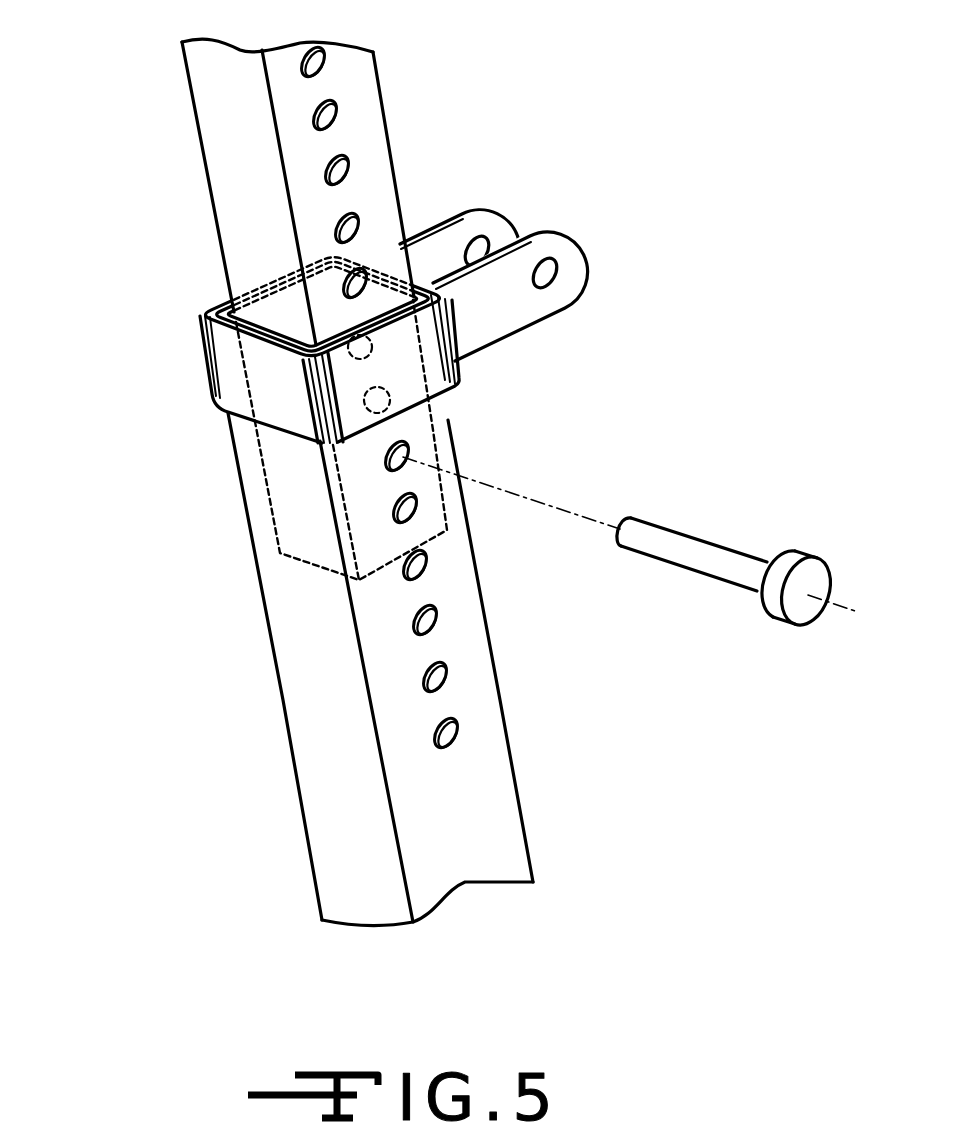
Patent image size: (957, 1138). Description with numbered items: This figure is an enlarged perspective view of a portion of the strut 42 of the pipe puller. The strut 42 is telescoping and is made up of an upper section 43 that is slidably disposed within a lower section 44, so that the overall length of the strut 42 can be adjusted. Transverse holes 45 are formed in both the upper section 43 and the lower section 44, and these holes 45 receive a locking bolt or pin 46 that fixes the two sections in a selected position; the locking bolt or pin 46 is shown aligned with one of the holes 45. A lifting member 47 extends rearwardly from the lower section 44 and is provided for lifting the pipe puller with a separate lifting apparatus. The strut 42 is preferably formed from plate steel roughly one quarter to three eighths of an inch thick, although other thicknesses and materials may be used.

The strut 42 is at (120, 56).
The upper section 43 is at (210, 120).
The lower section 44 is at (313, 782).
The transverse holes 45 is at (343, 168).
The locking bolt or pin 46 is at (753, 570).
The lifting member 47 is at (552, 243).